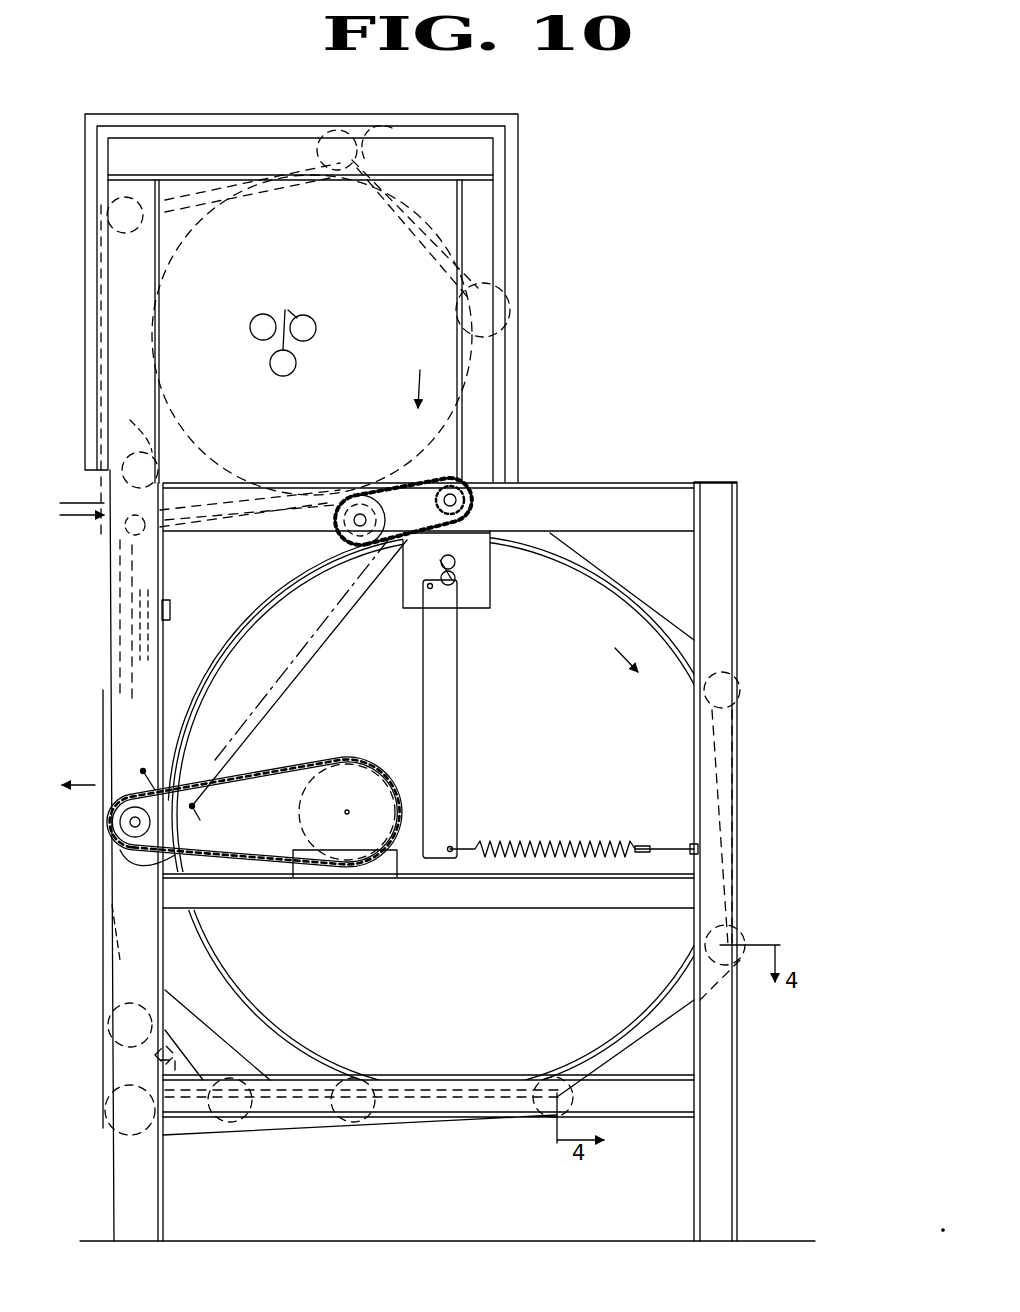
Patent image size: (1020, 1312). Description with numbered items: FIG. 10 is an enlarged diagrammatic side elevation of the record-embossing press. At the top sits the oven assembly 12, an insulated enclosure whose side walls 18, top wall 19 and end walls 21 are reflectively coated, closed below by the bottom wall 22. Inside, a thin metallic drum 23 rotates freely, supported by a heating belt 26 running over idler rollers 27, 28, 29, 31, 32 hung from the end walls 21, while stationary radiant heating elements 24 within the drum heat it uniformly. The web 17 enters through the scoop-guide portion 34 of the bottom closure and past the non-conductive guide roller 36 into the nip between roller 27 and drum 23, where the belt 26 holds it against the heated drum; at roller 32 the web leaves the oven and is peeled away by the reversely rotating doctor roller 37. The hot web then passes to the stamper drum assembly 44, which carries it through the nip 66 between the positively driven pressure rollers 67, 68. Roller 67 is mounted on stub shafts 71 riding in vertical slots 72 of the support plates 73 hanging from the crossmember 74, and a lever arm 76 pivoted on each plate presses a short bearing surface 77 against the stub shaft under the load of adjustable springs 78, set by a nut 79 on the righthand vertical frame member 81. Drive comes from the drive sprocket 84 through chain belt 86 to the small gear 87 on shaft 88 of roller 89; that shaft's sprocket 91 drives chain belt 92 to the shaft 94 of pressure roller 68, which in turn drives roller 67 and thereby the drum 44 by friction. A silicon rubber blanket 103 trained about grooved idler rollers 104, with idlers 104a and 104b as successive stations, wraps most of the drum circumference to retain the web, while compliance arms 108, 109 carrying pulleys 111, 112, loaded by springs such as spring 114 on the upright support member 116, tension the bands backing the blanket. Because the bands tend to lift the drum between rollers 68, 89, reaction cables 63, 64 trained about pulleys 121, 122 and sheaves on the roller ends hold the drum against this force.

The oven assembly 12 is at (522, 196).
The web 17 is at (73, 498).
The side walls 18 is at (522, 373).
The top wall 19 is at (226, 114).
The end walls 21 is at (289, 350).
The bottom wall 22 is at (222, 545).
The drum 23 is at (390, 212).
The radiant heating elements 24 is at (296, 316).
The heating belt 26 is at (394, 128).
The idler roller 27 is at (150, 412).
The idler roller 28 is at (108, 203).
The idler roller 29 is at (324, 132).
The idler roller 31 is at (492, 294).
The idler roller 32 is at (360, 495).
The scoop-guide portion 34 is at (122, 518).
The guide roller 36 is at (158, 462).
The doctor roller 37 is at (325, 536).
The stamper drum assembly 44 is at (598, 592).
The reaction cable 63 is at (236, 630).
The reaction cable 64 is at (112, 740).
The nip 66 is at (366, 548).
The pressure roller 67 is at (455, 612).
The pressure roller 68 is at (535, 520).
The stub shafts 71 is at (470, 598).
The vertical slots 72 is at (462, 562).
The support plates 73 is at (372, 610).
The crossmember 74 is at (652, 506).
The lever arm 76 is at (445, 780).
The bearing surface 77 is at (437, 660).
The adjustable springs 78 is at (572, 845).
The nut 79 is at (738, 805).
The vertical frame member 81 is at (738, 860).
The drive sprocket 84 is at (345, 820).
The chain belt 86 is at (295, 768).
The gear 87 is at (105, 862).
The shaft 88 is at (185, 768).
The roller 89 is at (112, 818).
The sprocket 91 is at (105, 778).
The chain belt 92 is at (142, 768).
The shaft 94 is at (462, 494).
The silicon rubber blanket 103 is at (645, 605).
The idler rollers 104 is at (738, 680).
The idler 104a is at (738, 945).
The idler 104b is at (545, 1112).
The compliance arms 108 is at (112, 1026).
The compliance arms 109 is at (108, 1112).
The pulleys 111 is at (110, 985).
The pulleys 112 is at (232, 1115).
The spring 114 is at (180, 1077).
The upright support member 116 is at (158, 1205).
The pulley 121 is at (128, 605).
The pulley 122 is at (128, 630).